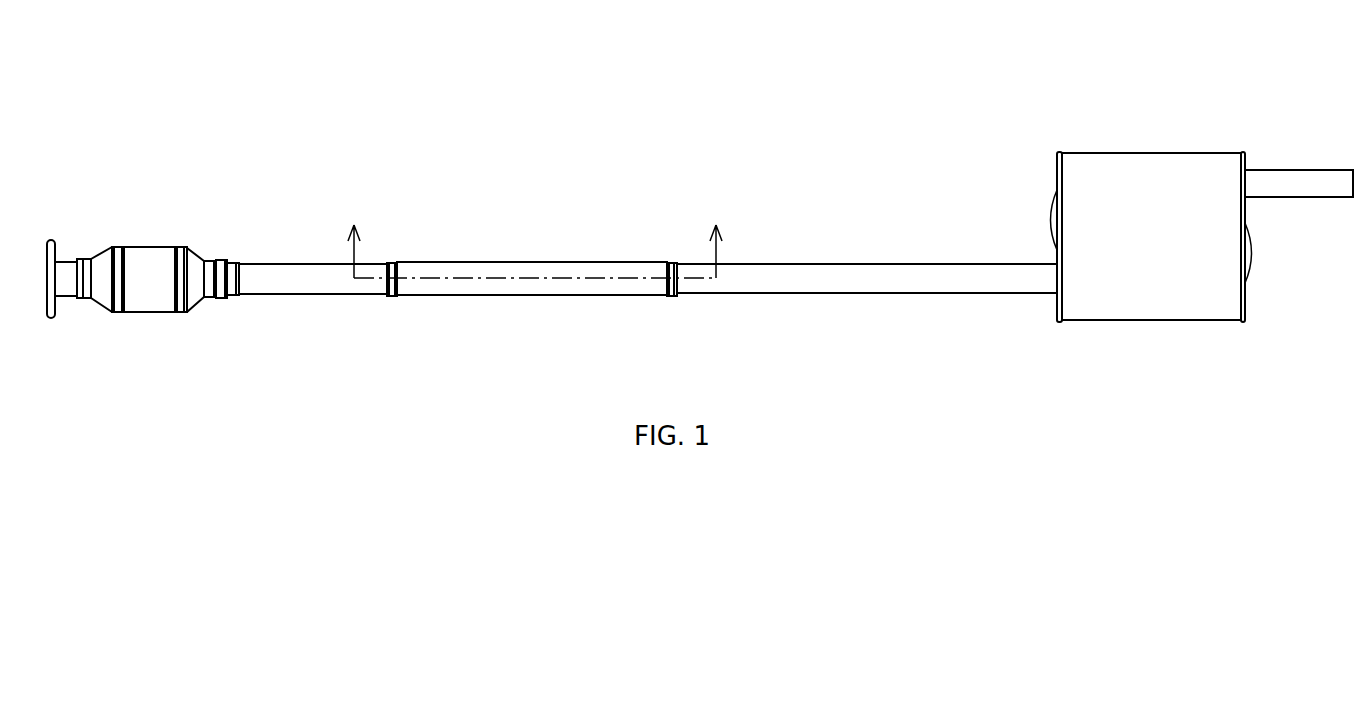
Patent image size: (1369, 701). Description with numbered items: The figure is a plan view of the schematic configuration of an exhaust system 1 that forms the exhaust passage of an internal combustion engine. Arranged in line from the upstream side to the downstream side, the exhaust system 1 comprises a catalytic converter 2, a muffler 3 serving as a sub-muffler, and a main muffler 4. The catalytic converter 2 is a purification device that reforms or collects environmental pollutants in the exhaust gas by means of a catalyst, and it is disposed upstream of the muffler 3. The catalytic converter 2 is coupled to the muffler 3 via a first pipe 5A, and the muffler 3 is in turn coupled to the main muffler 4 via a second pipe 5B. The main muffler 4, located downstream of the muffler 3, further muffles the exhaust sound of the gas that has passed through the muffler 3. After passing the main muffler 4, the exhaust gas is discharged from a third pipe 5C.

The exhaust system 1 is at (337, 132).
The catalytic converter 2 is at (152, 256).
The muffler 3 is at (558, 272).
The main muffler 4 is at (1156, 172).
The first pipe 5A is at (308, 283).
The second pipe 5B is at (878, 283).
The third pipe 5C is at (1285, 182).